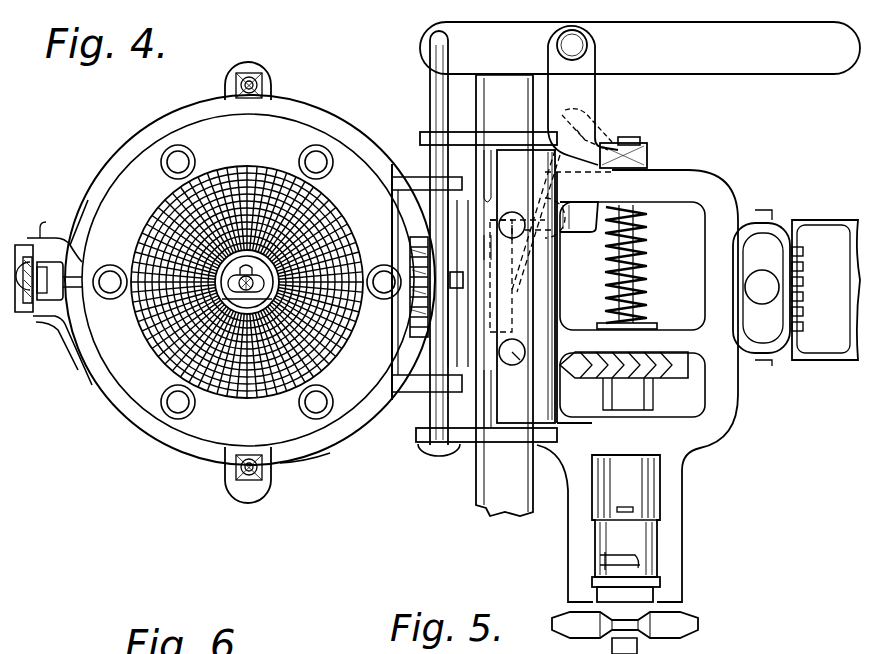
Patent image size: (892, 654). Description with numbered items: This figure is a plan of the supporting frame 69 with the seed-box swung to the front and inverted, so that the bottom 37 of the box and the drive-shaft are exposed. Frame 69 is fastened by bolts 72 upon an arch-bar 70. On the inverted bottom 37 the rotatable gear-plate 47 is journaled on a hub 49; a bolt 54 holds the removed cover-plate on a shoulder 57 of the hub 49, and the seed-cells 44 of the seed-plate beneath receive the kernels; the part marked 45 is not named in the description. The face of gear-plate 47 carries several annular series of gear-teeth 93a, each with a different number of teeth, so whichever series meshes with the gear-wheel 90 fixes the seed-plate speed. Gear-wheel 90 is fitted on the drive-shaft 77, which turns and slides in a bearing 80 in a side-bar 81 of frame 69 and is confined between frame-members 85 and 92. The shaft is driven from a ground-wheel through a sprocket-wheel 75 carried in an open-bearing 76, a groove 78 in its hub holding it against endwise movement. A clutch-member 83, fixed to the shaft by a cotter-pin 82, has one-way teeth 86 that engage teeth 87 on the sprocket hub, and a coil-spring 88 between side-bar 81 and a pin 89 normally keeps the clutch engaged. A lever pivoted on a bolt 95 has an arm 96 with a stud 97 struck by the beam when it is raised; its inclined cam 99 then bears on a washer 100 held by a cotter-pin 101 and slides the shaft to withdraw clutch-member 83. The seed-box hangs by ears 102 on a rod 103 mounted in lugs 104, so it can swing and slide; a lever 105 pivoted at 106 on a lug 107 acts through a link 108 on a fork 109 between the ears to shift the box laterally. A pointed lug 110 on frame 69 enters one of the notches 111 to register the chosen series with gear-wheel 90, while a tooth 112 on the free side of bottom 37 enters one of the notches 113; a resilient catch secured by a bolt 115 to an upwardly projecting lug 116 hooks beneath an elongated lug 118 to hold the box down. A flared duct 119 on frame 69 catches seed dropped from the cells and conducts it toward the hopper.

The bottom 37 is at (118, 405).
The gear-plate 47 is at (200, 430).
The rim portion 45 is at (290, 432).
The gear-wheel 90 is at (252, 82).
The hub 49 is at (110, 292).
The seed-cells 44 is at (316, 400).
The annular series of gear-teeth 93a is at (190, 218).
The bolt 54 is at (258, 266).
The shoulder 57 is at (248, 300).
The tooth 112 is at (76, 262).
The upwardly projecting lug 116 is at (27, 255).
The duct 119 is at (38, 300).
The bolt 115 is at (63, 330).
The ears 102 is at (403, 186).
The rod 103 is at (436, 414).
The notches 111 is at (410, 262).
The link 108 is at (430, 88).
The lugs 104 is at (425, 132).
The pointed lug 110 is at (464, 282).
The arch-bar 70 is at (512, 497).
The bolt 95 is at (545, 166).
The bolts 72 is at (513, 302).
The bracket or fork 109 is at (455, 319).
The stud or abutment 97 is at (538, 228).
The arm 96 is at (560, 236).
The bearing 80 is at (648, 170).
The side-bar 81 is at (690, 180).
The frame 69 is at (624, 513).
The frame member 85 is at (684, 462).
The drive-shaft 77 is at (650, 219).
The coil-spring 88 is at (650, 266).
The frame-member 92 is at (582, 330).
The pin 89 is at (622, 329).
The notches 113 is at (804, 318).
The elongated lug 118 is at (832, 340).
The lever 105 is at (640, 48).
The pivot 106 is at (585, 45).
The lug 107 is at (596, 96).
The inclined cam 99 is at (586, 126).
The washer 100 is at (622, 137).
The cotter-pin 101 is at (642, 143).
The clutch-member 83 is at (660, 535).
The cotter-pin 82 is at (621, 506).
The one-way teeth 86 is at (630, 565).
The teeth 87 is at (605, 562).
The groove 78 is at (660, 580).
The open-bearing 76 is at (654, 590).
The sprocket-wheel 75 is at (700, 624).